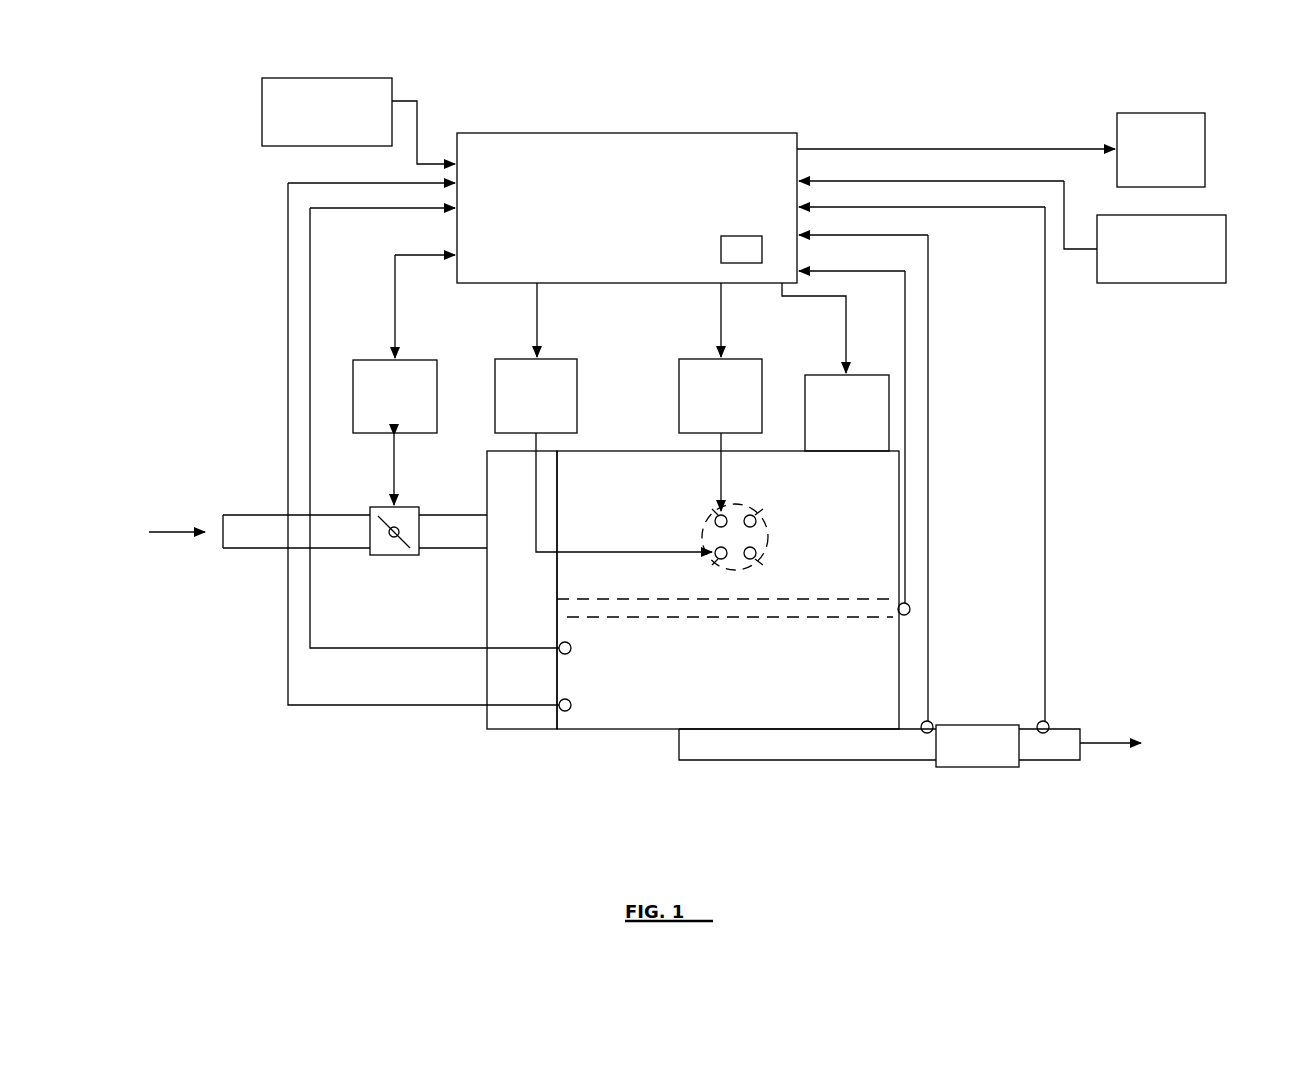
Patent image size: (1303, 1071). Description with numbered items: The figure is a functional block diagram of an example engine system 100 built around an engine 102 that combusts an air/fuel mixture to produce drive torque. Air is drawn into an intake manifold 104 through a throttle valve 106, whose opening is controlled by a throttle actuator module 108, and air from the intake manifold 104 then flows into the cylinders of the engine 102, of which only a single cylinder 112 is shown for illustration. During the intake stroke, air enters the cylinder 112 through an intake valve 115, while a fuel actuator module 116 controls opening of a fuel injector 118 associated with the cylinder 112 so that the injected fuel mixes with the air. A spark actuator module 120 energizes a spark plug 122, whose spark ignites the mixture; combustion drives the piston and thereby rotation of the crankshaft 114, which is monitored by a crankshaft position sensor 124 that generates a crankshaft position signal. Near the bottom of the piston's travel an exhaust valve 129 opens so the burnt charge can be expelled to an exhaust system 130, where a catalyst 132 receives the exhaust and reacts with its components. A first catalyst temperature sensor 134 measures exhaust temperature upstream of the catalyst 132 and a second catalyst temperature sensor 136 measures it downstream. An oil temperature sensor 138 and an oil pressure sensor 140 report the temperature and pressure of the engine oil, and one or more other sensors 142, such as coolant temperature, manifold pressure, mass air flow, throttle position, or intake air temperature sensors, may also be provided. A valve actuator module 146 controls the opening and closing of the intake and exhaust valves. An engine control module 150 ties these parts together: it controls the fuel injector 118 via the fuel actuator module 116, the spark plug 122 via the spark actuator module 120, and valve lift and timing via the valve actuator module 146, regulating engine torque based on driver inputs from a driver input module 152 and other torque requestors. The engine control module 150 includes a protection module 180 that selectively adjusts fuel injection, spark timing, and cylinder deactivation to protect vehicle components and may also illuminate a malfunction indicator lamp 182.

The engine system 100 is at (128, 96).
The engine 102 is at (637, 451).
The intake manifold 104 is at (487, 480).
The throttle valve 106 is at (395, 555).
The throttle actuator module 108 is at (375, 360).
The cylinder 112 is at (760, 576).
The crankshaft 114 is at (823, 597).
The intake valve 115 is at (757, 513).
The fuel actuator module 116 is at (515, 359).
The fuel injector 118 is at (714, 560).
The spark actuator module 120 is at (700, 359).
The spark plug 122 is at (714, 515).
The crankshaft position sensor 124 is at (910, 606).
The exhaust valve 129 is at (757, 550).
The exhaust system 130 is at (827, 762).
The catalyst 132 is at (980, 725).
The first catalyst temperature sensor 134 is at (927, 733).
The second catalyst temperature sensor 136 is at (1043, 733).
The oil temperature sensor 138 is at (571, 648).
The oil pressure sensor 140 is at (571, 705).
The other sensors 142 is at (262, 108).
The valve actuator module 146 is at (830, 375).
The engine control module 150 is at (626, 133).
The driver input module 152 is at (1226, 248).
The protection module 180 is at (740, 236).
The malfunction indicator lamp 182 is at (1205, 122).